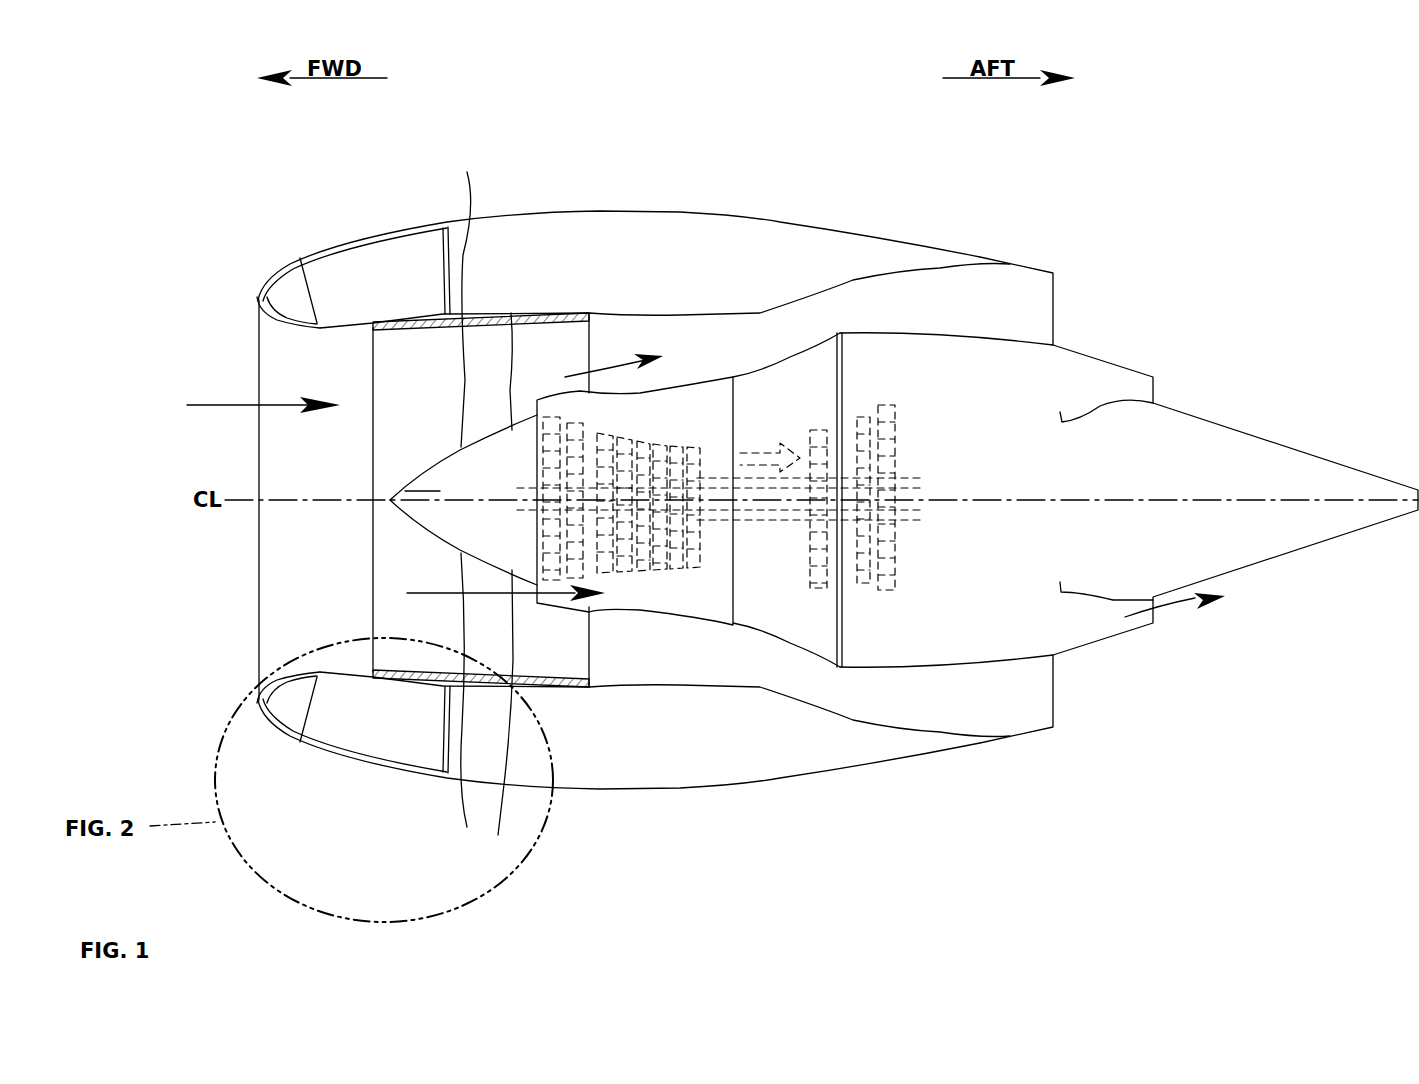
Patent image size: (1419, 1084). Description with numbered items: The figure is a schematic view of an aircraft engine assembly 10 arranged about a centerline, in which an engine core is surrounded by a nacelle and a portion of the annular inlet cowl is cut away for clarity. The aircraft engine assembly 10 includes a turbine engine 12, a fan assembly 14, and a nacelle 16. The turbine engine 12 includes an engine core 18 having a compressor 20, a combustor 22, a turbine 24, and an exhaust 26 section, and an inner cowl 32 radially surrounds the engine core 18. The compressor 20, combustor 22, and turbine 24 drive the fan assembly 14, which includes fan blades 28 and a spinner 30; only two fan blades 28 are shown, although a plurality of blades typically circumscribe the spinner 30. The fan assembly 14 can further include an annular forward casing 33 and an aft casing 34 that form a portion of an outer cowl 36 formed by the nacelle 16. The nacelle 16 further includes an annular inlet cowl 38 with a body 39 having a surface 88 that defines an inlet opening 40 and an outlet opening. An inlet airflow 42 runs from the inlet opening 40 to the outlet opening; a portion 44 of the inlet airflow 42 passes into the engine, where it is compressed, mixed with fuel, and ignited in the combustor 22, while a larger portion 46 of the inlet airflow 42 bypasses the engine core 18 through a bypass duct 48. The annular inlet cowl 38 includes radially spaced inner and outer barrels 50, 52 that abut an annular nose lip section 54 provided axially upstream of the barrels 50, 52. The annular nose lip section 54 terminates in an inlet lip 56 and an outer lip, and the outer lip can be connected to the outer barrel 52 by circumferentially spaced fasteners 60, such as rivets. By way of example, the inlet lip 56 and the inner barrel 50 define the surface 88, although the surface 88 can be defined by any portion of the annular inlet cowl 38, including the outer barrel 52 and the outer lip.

The aircraft engine assembly 10 is at (632, 98).
The turbine engine 12 is at (713, 407).
The fan assembly 14 is at (375, 623).
The nacelle 16 is at (725, 207).
The engine core 18 is at (722, 586).
The compressor 20 is at (640, 553).
The combustor 22 is at (762, 537).
The turbine 24 is at (865, 600).
The exhaust section 26 is at (1168, 617).
The fan blades 28 is at (462, 499).
The spinner 30 is at (388, 495).
The inner cowl 32 is at (843, 330).
The annular forward casing 33 is at (370, 588).
The aft casing 34 is at (595, 335).
The outer cowl 36 is at (862, 290).
The annular inlet cowl 38 is at (373, 233).
The body 39 is at (350, 277).
The inlet opening 40 is at (240, 583).
The inlet airflow 42 is at (233, 405).
The portion of the inlet airflow 44 is at (509, 587).
The larger portion of the inlet airflow 46 is at (610, 372).
The bypass duct 48 is at (795, 330).
The inner barrel 50 is at (373, 330).
The outer barrel 52 is at (417, 230).
The annular nose lip section 54 is at (280, 288).
The inlet lip 56 is at (305, 328).
The fasteners 60 is at (305, 257).
The surface 88 is at (327, 332).